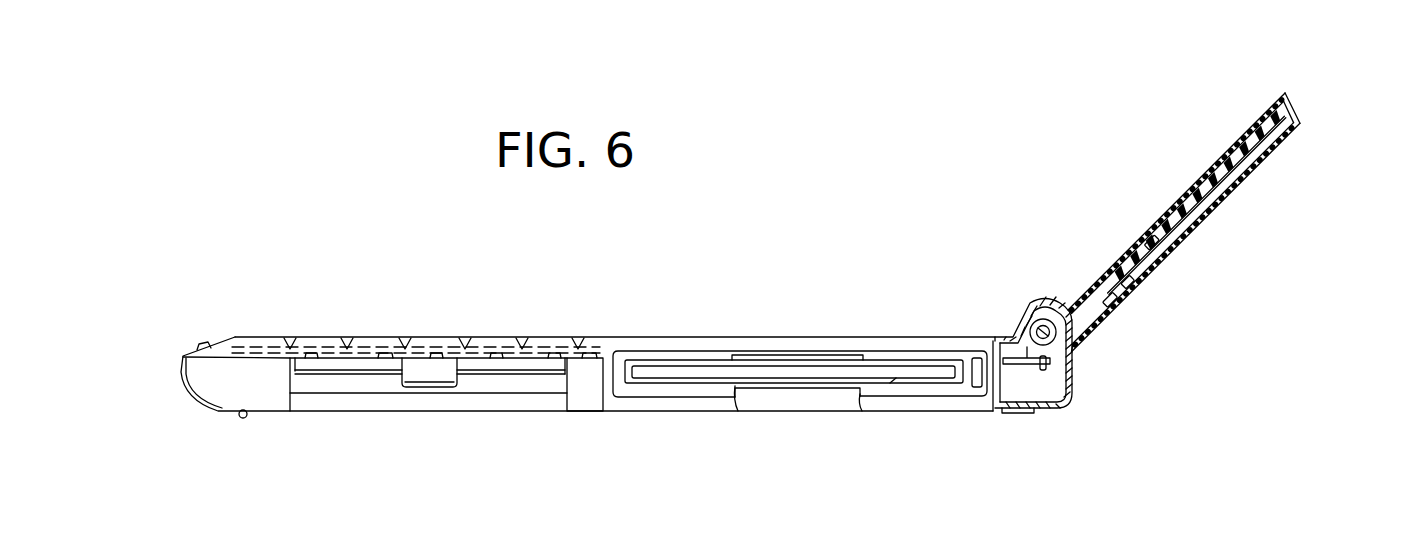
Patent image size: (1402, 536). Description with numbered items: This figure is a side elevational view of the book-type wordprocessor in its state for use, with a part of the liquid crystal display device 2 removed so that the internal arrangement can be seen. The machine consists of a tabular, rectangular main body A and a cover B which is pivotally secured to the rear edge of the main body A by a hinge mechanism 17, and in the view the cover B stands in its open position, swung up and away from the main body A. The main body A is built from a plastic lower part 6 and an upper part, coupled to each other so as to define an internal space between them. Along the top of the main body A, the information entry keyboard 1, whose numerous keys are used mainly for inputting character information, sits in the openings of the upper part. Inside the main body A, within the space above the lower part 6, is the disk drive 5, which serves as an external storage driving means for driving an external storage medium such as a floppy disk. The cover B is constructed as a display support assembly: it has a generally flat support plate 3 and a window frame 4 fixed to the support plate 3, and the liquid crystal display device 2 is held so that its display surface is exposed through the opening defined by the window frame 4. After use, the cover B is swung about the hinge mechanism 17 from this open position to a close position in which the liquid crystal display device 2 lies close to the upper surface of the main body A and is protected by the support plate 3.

The information entry keyboard 1 is at (268, 345).
The main body A is at (471, 329).
The lower part 6 is at (413, 412).
The disk drive 5 is at (687, 392).
The hinge mechanism 17 is at (1030, 303).
The liquid crystal display device 2 is at (1207, 177).
The support plate 3 is at (1140, 292).
The window frame 4 is at (1157, 233).
The cover B is at (1230, 134).